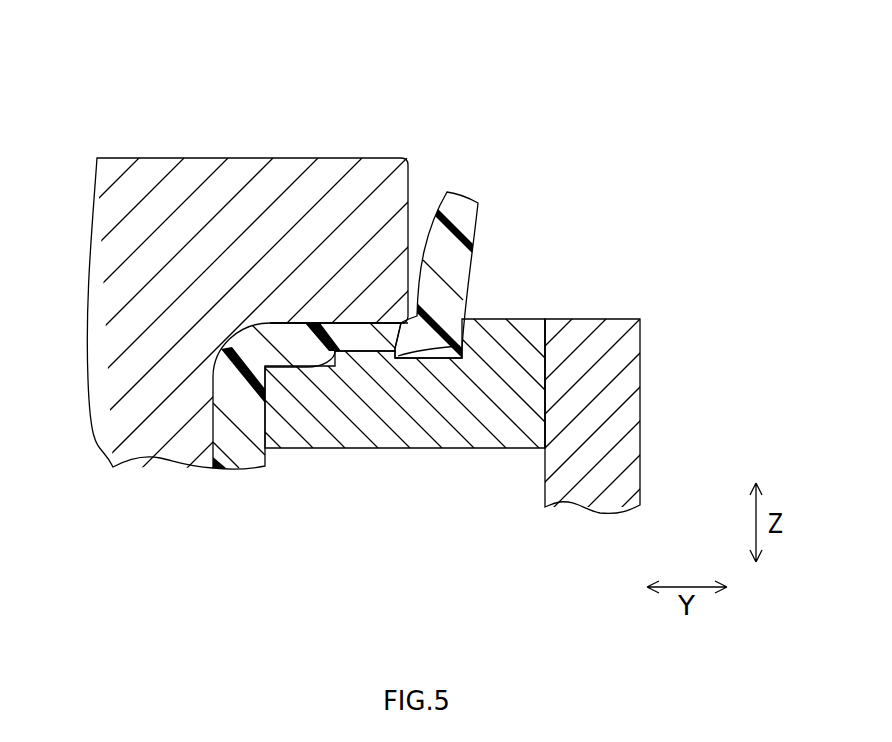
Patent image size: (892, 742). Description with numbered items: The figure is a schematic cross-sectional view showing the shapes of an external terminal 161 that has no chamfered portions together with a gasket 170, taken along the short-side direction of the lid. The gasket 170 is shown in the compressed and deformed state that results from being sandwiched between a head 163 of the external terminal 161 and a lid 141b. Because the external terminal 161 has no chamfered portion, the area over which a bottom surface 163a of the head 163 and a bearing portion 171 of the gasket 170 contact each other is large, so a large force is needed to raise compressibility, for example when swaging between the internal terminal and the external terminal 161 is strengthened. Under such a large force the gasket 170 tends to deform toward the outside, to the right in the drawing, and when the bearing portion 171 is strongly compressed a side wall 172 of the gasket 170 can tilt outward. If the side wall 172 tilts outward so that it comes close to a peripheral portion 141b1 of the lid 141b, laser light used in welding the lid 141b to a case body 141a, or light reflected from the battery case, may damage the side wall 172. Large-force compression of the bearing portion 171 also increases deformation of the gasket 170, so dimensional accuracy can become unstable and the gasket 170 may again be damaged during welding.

The external terminal 161 is at (142, 117).
The head 163 is at (298, 157).
The bottom surface 163a is at (348, 323).
The gasket 170 is at (488, 185).
The bearing portion 171 is at (295, 350).
The side wall 172 is at (468, 257).
The case body 141a is at (593, 318).
The lid 141b is at (442, 448).
The peripheral portion 141b1 is at (545, 385).